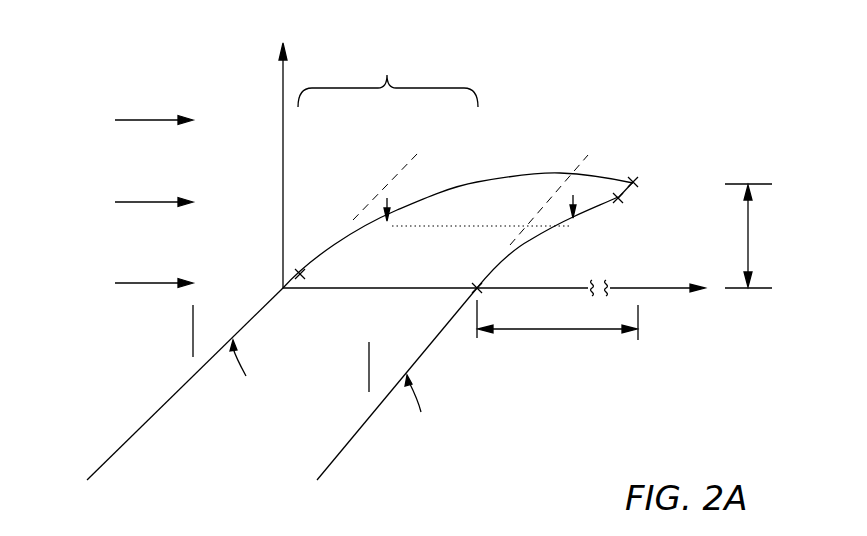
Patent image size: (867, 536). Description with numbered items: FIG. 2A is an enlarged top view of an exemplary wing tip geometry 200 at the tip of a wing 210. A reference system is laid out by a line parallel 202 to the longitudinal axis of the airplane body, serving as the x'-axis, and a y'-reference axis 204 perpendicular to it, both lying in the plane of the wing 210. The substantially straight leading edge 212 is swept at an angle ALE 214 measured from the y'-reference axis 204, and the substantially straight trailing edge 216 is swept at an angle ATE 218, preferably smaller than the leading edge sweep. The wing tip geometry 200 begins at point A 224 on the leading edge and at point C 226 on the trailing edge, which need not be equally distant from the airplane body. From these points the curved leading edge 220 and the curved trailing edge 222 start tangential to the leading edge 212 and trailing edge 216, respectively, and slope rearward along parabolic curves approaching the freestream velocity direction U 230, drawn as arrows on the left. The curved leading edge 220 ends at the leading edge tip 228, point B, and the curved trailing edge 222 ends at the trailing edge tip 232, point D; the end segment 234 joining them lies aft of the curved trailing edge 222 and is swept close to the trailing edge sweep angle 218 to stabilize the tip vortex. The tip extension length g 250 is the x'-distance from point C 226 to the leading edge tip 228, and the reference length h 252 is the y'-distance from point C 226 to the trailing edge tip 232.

The wing tip geometry 200 is at (388, 80).
The line parallel to the longitudinal axis 202 is at (633, 287).
The y'-reference axis 204 is at (281, 84).
The wing 210 is at (491, 392).
The leading edge 212 is at (148, 400).
The leading edge sweep angle 214 is at (180, 322).
The trailing edge 216 is at (362, 448).
The trailing edge sweep angle 218 is at (356, 361).
The curved leading edge 220 is at (480, 182).
The curved trailing edge 222 is at (545, 254).
The point A 224 is at (300, 273).
The point C 226 is at (480, 293).
The leading edge tip 228 is at (633, 180).
The freestream velocity direction U 230 is at (128, 118).
The trailing edge tip 232 is at (618, 200).
The end segment 234 is at (625, 192).
The tip extension length g 250 is at (559, 366).
The reference length h 252 is at (748, 233).